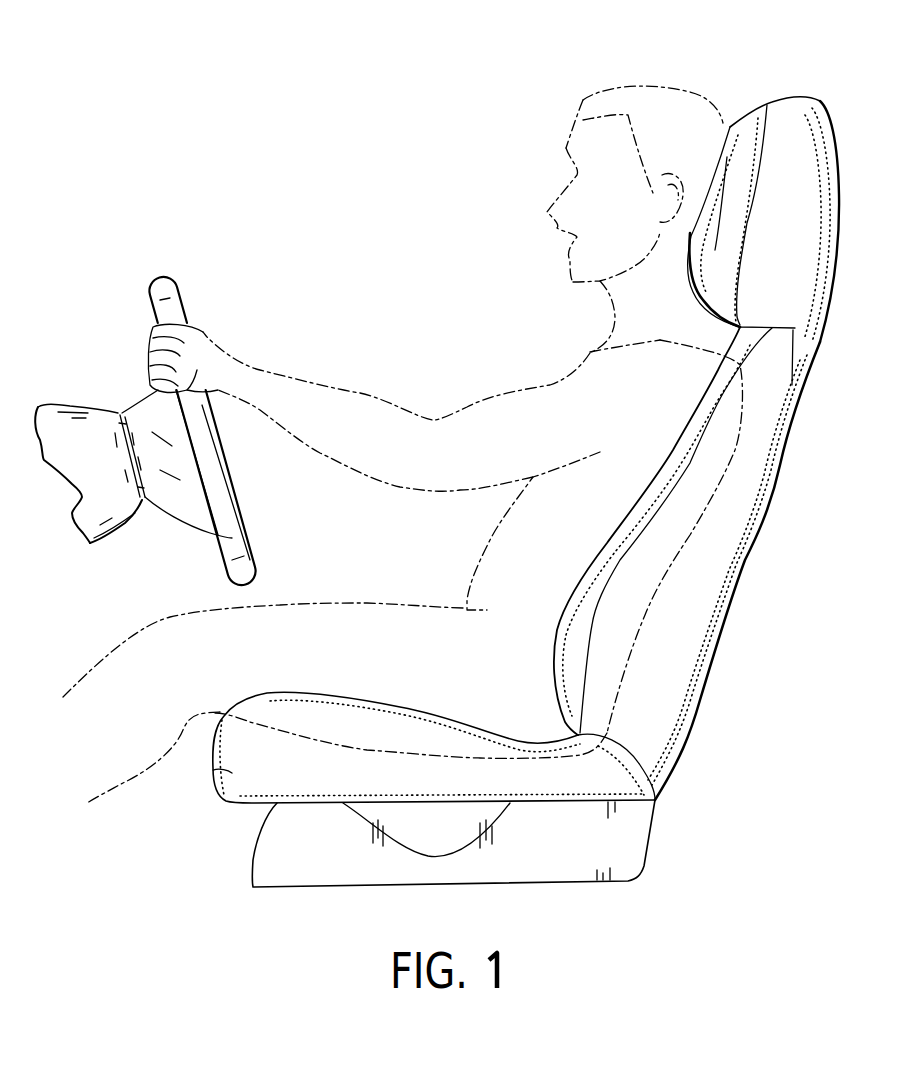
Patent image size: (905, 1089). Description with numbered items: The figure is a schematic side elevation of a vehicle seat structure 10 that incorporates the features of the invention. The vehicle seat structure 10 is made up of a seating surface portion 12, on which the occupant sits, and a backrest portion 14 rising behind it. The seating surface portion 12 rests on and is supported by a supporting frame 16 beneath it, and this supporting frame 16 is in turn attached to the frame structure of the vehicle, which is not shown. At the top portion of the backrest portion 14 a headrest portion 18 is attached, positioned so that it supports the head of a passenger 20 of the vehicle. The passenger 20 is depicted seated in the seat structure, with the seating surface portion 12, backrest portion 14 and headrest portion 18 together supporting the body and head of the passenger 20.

The vehicle seat structure 10 is at (495, 493).
The seating surface portion 12 is at (220, 778).
The backrest portion 14 is at (773, 493).
The supporting frame 16 is at (567, 882).
The headrest portion 18 is at (813, 97).
The passenger 20 is at (577, 338).